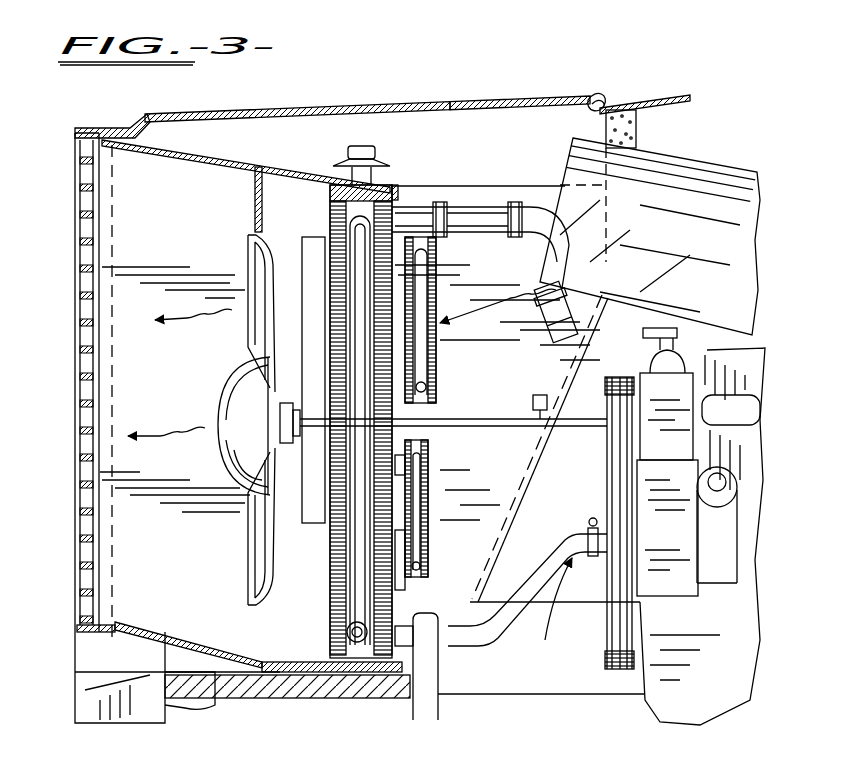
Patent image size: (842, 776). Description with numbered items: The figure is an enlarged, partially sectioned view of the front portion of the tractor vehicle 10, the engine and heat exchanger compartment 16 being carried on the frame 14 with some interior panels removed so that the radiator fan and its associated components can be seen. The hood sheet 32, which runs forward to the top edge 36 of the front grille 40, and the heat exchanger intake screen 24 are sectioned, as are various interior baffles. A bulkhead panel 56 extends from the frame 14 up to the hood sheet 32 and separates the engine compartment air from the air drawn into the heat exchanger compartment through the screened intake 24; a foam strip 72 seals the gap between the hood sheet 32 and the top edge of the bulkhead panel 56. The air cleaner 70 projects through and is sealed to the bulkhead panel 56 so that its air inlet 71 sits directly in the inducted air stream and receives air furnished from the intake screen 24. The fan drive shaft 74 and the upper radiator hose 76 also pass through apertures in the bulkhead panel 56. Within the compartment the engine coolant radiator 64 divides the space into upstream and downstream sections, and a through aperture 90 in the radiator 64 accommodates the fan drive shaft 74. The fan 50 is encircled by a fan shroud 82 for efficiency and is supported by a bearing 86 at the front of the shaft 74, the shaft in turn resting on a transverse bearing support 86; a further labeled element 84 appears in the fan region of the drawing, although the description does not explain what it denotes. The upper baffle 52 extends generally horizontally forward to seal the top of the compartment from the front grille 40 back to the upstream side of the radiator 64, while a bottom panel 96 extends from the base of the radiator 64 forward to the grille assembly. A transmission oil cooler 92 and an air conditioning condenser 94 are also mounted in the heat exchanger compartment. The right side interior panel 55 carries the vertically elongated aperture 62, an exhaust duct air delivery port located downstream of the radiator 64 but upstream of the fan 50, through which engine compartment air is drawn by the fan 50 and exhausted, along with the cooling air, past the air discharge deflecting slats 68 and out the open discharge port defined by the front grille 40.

The tractor vehicle 10 is at (457, 100).
The frame 14 is at (470, 682).
The engine and heat exchanger compartment 16 is at (73, 662).
The heat exchanger intake screen 24 is at (405, 102).
The hood sheet 32 is at (610, 108).
The top edge of the front grille 36 is at (84, 356).
The front grille 40 is at (63, 361).
The fan 50 is at (258, 247).
The upper baffle 52 is at (120, 80).
The right side inner side panel 55 is at (453, 147).
The bulkhead panel 56 is at (513, 505).
The elongated aperture 62 is at (332, 398).
The radiator 64 is at (385, 190).
The air discharge deflecting slats 68 is at (72, 272).
The air cleaner 70 is at (660, 152).
The air inlet 71 is at (518, 127).
The foam strip 72 is at (588, 103).
The fan drive shaft 74 is at (490, 420).
The upper radiator hose 76 is at (550, 250).
The fan shroud 82 is at (246, 174).
The fan shroud plate 84 is at (313, 272).
The bearing 86 is at (287, 456).
The through aperture 90 is at (360, 410).
The transmission oil cooler 92 is at (440, 364).
The air conditioning condenser 94 is at (430, 470).
The bottom panel 96 is at (150, 623).